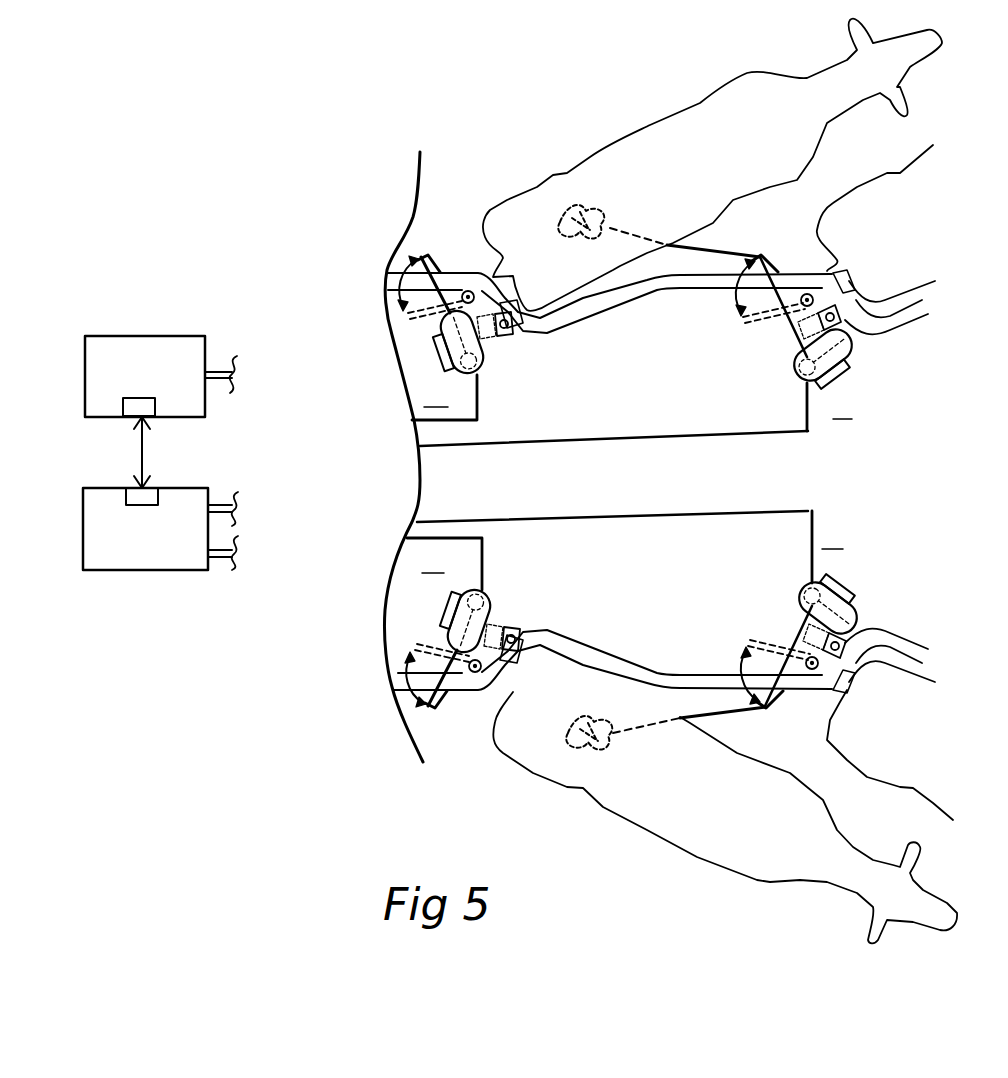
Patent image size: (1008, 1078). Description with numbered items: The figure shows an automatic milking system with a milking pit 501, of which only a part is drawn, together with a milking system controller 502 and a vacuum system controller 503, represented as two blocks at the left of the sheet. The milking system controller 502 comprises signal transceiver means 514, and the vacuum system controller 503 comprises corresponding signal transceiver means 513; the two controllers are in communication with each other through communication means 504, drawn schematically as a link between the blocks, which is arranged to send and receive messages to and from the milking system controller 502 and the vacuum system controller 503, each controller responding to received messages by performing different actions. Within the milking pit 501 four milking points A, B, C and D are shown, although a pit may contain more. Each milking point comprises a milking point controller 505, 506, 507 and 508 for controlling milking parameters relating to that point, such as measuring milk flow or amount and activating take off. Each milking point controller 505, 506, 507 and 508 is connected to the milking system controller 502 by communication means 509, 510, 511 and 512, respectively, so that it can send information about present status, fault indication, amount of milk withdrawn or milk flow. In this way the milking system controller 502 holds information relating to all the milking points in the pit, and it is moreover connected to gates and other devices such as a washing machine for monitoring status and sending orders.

The milking pit 501 is at (908, 489).
The milking system controller 502 is at (143, 570).
The vacuum system controller 503 is at (112, 336).
The communication means 504 is at (144, 447).
The milking point controller 505 is at (487, 351).
The milking point controller 506 is at (847, 343).
The milking point controller 507 is at (492, 600).
The milking point controller 508 is at (853, 627).
The communication means 509 is at (478, 398).
The communication means 510 is at (810, 393).
The communication means 511 is at (482, 553).
The communication means 512 is at (812, 555).
The signal transceiver means 513 is at (146, 398).
The signal transceiver means 514 is at (130, 505).